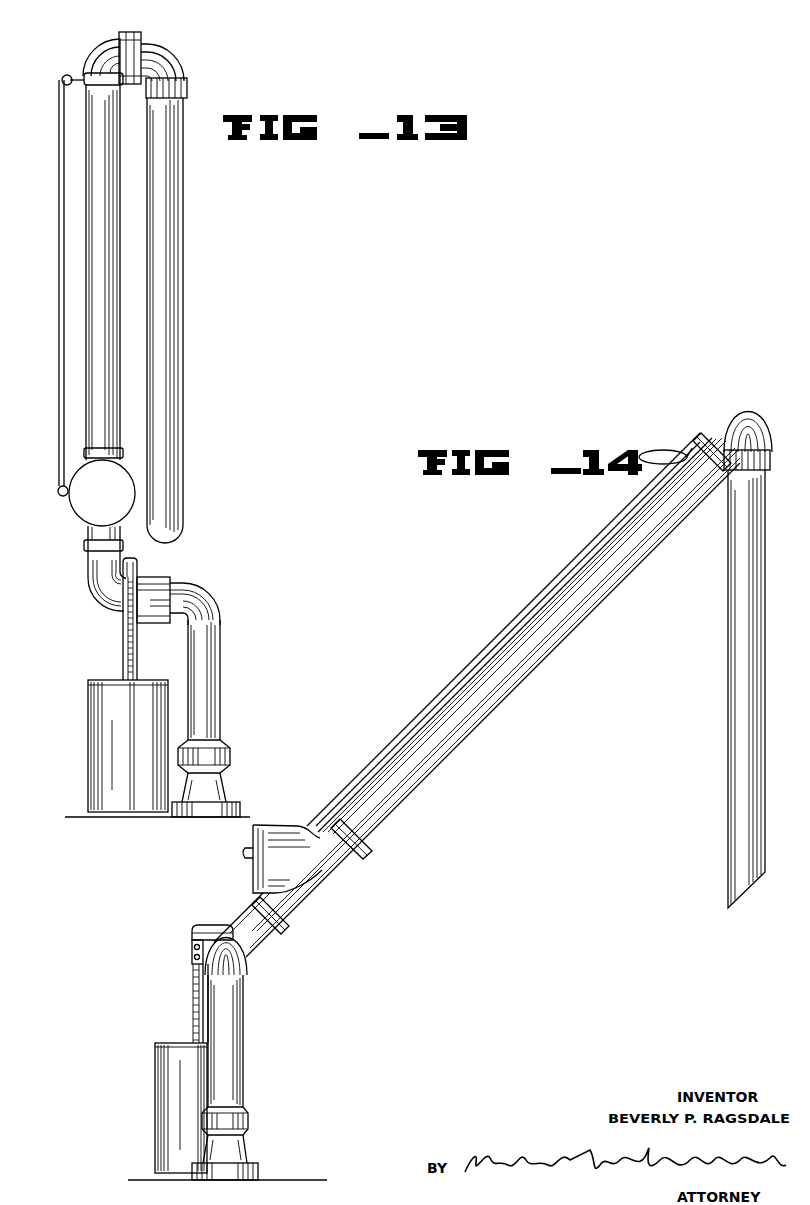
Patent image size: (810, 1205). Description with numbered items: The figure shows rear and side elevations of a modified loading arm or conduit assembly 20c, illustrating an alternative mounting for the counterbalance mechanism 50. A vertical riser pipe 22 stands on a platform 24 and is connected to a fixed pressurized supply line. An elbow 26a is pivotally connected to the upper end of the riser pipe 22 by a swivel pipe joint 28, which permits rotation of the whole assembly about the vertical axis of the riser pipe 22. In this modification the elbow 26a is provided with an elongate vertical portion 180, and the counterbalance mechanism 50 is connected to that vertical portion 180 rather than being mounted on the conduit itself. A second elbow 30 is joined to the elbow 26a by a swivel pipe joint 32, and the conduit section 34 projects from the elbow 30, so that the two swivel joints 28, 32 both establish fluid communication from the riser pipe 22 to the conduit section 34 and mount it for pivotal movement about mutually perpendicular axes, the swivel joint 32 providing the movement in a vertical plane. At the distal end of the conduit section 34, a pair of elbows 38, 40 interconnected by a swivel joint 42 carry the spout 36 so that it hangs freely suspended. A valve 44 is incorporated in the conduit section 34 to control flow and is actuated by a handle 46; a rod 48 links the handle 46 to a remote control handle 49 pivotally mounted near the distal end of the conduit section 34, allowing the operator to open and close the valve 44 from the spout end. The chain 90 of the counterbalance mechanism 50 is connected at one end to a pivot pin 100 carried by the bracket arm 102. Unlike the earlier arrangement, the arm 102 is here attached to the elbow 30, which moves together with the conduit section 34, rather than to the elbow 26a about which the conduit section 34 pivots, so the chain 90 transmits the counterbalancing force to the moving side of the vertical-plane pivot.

In FIG. 13, the loading arm or conduit assembly 20c is at (210, 270).
In FIG. 14, the loading arm or conduit assembly 20c is at (428, 812).
In FIG. 13, the riser pipe 22 is at (212, 792).
In FIG. 14, the riser pipe 22 is at (226, 1150).
In FIG. 13, the platform 24 is at (72, 817).
In FIG. 14, the platform 24 is at (305, 1180).
In FIG. 13, the elbow 26a is at (200, 592).
In FIG. 14, the elbow 26a is at (236, 966).
In FIG. 13, the swivel pipe joint 28 is at (230, 762).
In FIG. 14, the swivel pipe joint 28 is at (248, 1120).
In FIG. 13, the second 90° elbow 30 is at (106, 585).
In FIG. 14, the second 90° elbow 30 is at (252, 950).
In FIG. 13, the swivel pipe joint 32 is at (160, 624).
In FIG. 14, the swivel pipe joint 32 is at (203, 965).
In FIG. 13, the conduit section 34 is at (105, 282).
In FIG. 14, the conduit section 34 is at (500, 716).
In FIG. 13, the spout 36 is at (165, 352).
In FIG. 14, the spout 36 is at (742, 722).
In FIG. 13, the 90° elbow 38 is at (108, 52).
In FIG. 14, the 90° elbow 38 is at (712, 438).
In FIG. 13, the 90° elbow 40 is at (184, 62).
In FIG. 14, the 90° elbow 40 is at (752, 432).
In FIG. 13, the swivel joint 42 is at (135, 48).
In FIG. 14, the swivel joint 42 is at (742, 410).
In FIG. 13, the valve 44 is at (116, 505).
In FIG. 14, the valve 44 is at (270, 866).
In FIG. 13, the handle 46 is at (60, 496).
In FIG. 14, the handle 46 is at (244, 855).
In FIG. 13, the rod 48 is at (60, 342).
In FIG. 14, the rod 48 is at (484, 656).
In FIG. 13, the remote control handle 49 is at (65, 75).
In FIG. 14, the remote control handle 49 is at (663, 452).
In FIG. 13, the counterbalance mechanism 50 is at (88, 698).
In FIG. 14, the counterbalance mechanism 50 is at (158, 1070).
In FIG. 13, the chain 90 is at (123, 640).
In FIG. 14, the chain 90 is at (193, 992).
In FIG. 13, the pivot pin 100 is at (137, 575).
In FIG. 14, the pivot pin 100 is at (192, 932).
In FIG. 13, the bracket arm 102 is at (136, 560).
In FIG. 14, the bracket arm 102 is at (216, 930).
In FIG. 13, the elongate vertical portion 180 is at (200, 700).
In FIG. 14, the elongate vertical portion 180 is at (222, 1060).